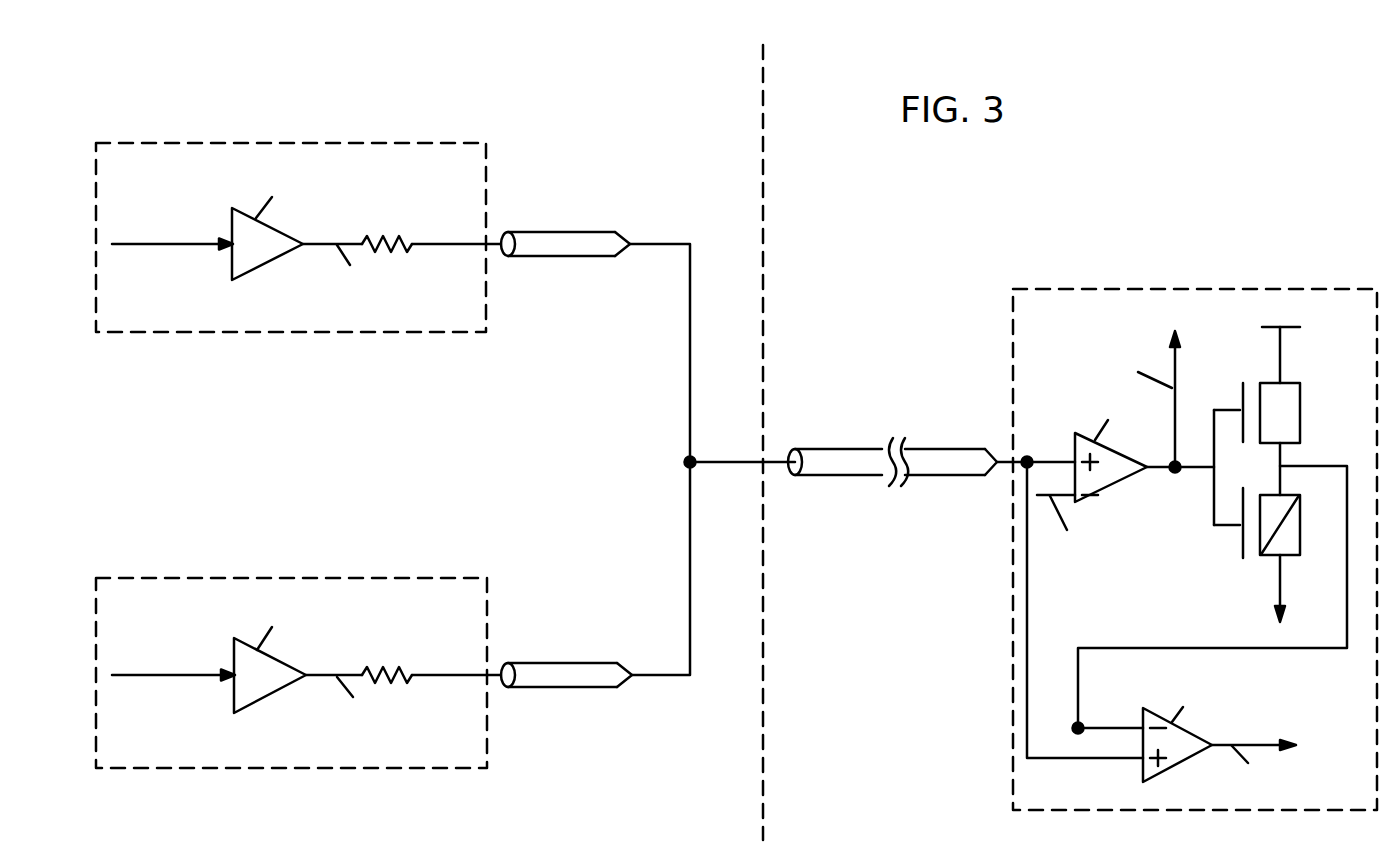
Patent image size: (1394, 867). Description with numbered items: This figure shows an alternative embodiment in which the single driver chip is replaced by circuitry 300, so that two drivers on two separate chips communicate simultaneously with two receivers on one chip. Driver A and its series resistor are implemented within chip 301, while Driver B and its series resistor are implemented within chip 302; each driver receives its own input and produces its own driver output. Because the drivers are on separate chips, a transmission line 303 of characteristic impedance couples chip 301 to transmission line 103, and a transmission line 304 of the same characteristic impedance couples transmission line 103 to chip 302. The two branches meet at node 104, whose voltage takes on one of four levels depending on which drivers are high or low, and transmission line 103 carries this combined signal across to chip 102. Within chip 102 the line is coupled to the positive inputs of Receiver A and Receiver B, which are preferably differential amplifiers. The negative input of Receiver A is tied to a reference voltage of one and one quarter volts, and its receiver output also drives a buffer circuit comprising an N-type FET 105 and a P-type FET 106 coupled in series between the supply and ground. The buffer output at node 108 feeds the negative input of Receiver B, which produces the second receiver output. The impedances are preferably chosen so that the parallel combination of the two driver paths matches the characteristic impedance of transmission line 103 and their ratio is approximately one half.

The circuitry 300 is at (631, 122).
The chip 301 is at (427, 143).
The chip 302 is at (427, 577).
The transmission line 303 is at (578, 259).
The transmission line 304 is at (582, 689).
The node 104 is at (696, 457).
The transmission line 103 is at (843, 476).
The chip 102 is at (1340, 284).
The N-type FET 105 is at (1299, 383).
The P-type FET 106 is at (1265, 558).
The node 108 is at (1082, 723).